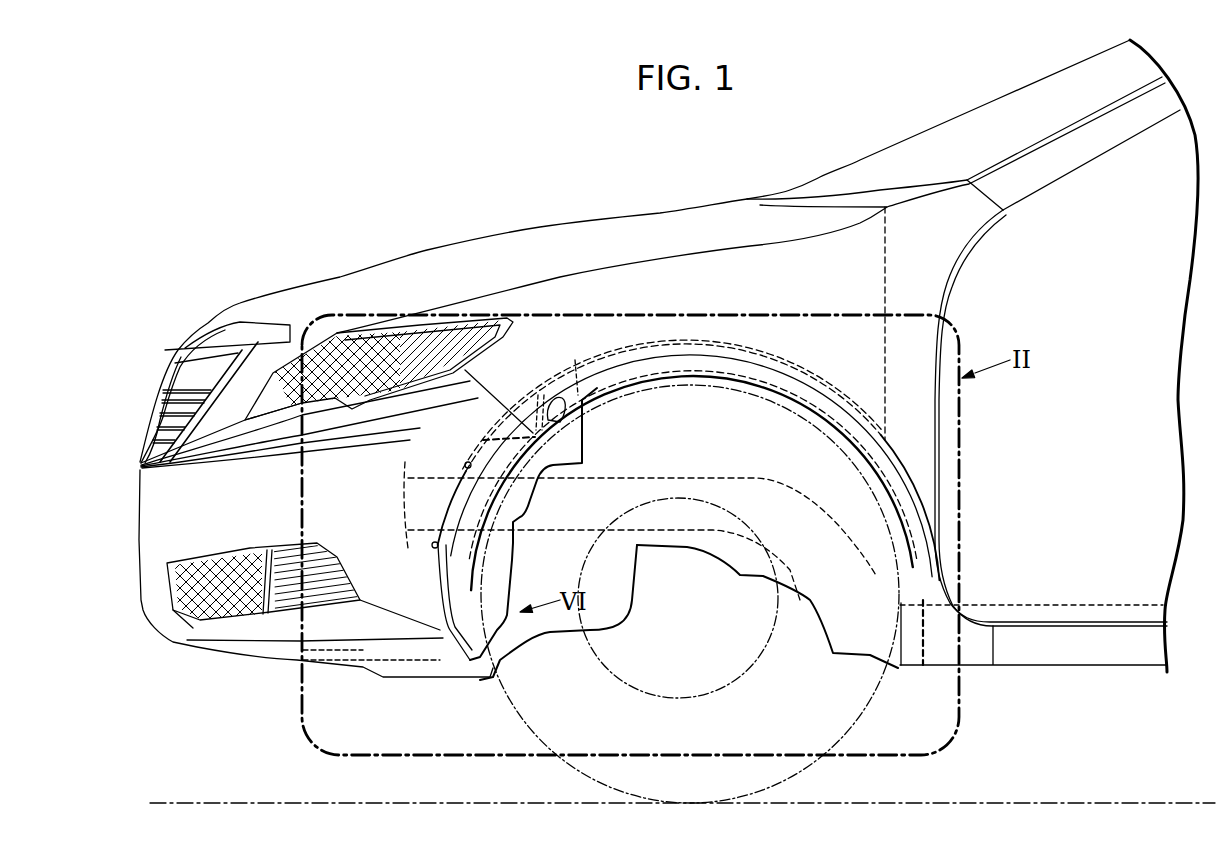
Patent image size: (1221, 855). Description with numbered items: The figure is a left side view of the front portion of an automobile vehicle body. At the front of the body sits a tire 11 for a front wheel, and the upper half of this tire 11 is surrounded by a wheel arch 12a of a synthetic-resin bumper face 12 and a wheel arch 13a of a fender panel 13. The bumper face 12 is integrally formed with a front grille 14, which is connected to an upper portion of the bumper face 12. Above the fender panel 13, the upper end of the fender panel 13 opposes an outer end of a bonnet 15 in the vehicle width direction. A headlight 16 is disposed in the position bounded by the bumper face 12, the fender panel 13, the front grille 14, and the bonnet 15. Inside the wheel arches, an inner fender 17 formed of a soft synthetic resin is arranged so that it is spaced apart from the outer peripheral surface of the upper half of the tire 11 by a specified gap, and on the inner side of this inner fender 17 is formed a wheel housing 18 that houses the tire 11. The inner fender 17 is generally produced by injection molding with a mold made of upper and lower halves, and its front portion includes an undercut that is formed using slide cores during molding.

The tire 11 is at (511, 690).
The bumper face 12 is at (229, 666).
The wheel arch 12a is at (483, 603).
The fender panel 13 is at (737, 392).
The wheel arch 13a is at (621, 380).
The front grille 14 is at (185, 387).
The bonnet 15 is at (488, 253).
The headlight 16 is at (330, 343).
The inner fender 17 is at (540, 497).
The wheel housing 18 is at (697, 452).